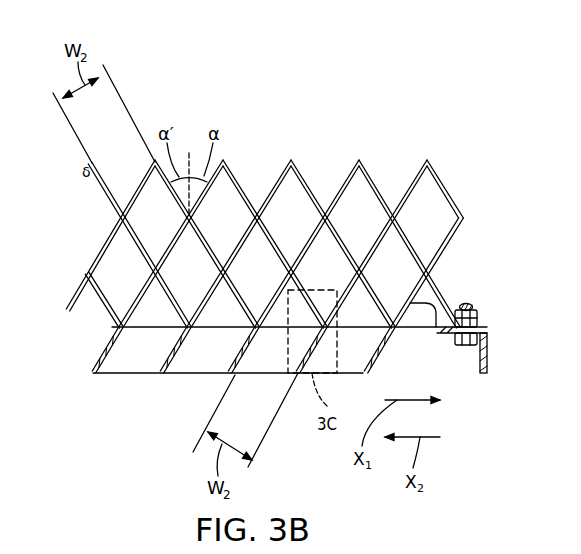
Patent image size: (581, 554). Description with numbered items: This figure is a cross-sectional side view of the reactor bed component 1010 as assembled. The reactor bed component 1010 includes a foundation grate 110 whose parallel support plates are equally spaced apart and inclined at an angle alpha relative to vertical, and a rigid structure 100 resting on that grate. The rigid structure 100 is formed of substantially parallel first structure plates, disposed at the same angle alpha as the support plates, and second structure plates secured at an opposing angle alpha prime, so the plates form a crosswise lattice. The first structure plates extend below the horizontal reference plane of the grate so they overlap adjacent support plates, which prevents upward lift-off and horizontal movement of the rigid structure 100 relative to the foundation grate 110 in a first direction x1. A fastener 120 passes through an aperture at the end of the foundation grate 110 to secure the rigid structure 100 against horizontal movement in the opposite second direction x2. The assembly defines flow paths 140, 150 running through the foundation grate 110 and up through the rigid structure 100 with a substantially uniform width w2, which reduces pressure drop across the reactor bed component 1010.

The rigid structure 100 is at (301, 272).
The foundation grate 110 is at (490, 350).
The fastener 120 is at (478, 313).
The flow path 140 is at (150, 203).
The flow path 150 is at (270, 377).
The reactor bed component 1010 is at (298, 272).